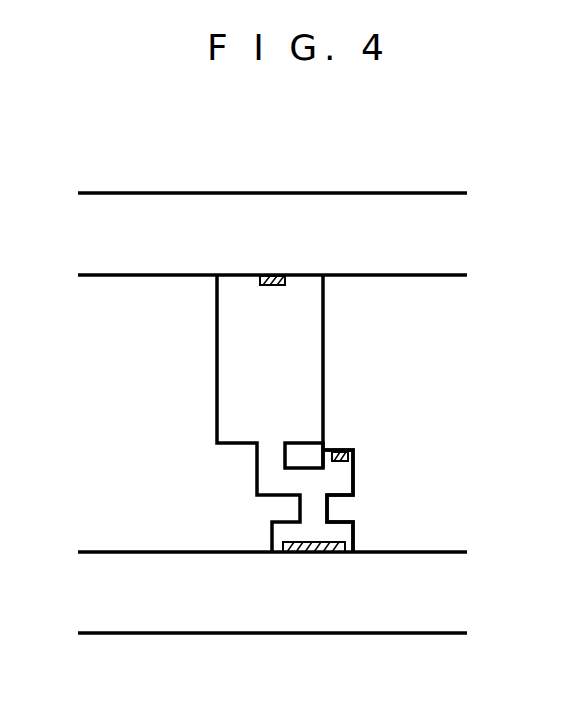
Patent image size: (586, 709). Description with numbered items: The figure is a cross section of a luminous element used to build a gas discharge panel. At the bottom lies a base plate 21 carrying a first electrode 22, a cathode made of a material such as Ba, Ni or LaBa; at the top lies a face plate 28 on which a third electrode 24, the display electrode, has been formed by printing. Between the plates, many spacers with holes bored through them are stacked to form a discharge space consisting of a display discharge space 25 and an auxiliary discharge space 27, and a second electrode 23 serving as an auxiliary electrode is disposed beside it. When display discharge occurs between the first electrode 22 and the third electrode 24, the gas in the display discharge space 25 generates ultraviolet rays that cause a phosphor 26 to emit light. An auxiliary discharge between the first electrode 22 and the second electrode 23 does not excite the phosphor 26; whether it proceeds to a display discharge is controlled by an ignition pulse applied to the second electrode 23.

The base plate 21 is at (317, 614).
The first electrode 22 is at (319, 553).
The second electrode 23 is at (346, 450).
The third electrode 24 is at (271, 287).
The display discharge space 25 is at (290, 362).
The phosphor 26 is at (218, 364).
The auxiliary discharge space 27 is at (338, 481).
The face plate 28 is at (312, 192).